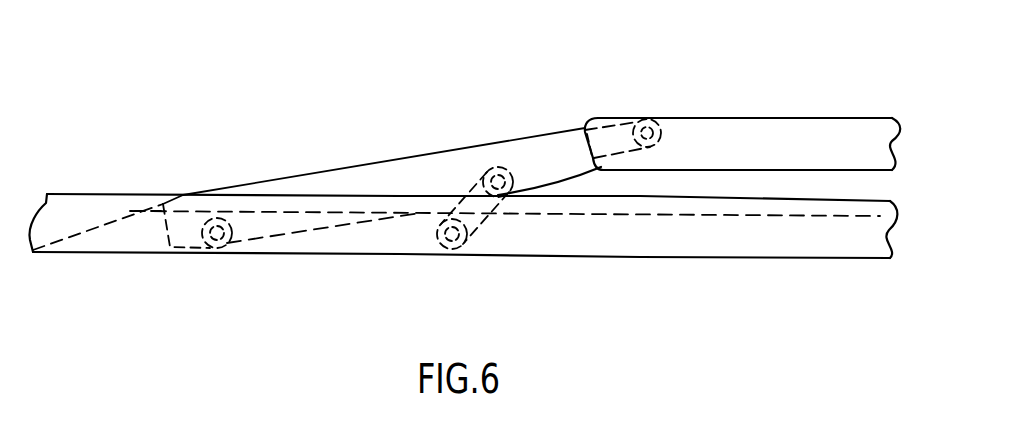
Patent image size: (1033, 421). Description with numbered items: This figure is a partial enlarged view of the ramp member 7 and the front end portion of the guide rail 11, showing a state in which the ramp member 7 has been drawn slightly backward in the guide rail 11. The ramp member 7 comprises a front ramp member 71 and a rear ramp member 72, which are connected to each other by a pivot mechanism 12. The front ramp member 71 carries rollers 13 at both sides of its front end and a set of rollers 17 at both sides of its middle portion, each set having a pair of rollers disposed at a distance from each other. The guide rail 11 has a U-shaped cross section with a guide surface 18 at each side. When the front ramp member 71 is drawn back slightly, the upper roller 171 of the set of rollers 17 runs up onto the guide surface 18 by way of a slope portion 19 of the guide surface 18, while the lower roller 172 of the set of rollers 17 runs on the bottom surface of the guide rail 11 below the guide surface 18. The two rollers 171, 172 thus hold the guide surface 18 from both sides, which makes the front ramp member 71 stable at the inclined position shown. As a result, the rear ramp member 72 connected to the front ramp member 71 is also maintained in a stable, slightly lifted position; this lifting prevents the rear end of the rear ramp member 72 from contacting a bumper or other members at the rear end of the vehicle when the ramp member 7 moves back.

The ramp member 7 is at (681, 106).
The guide rail 11 is at (557, 257).
The pivot mechanism 12 is at (645, 132).
The rollers 13 is at (217, 238).
The set of rollers 17 is at (463, 182).
The guide surface 18 is at (661, 213).
The slope portion 19 is at (137, 207).
The front ramp member 71 is at (413, 172).
The rear ramp member 72 is at (745, 138).
The upper roller 171 is at (507, 165).
The lower roller 172 is at (450, 243).